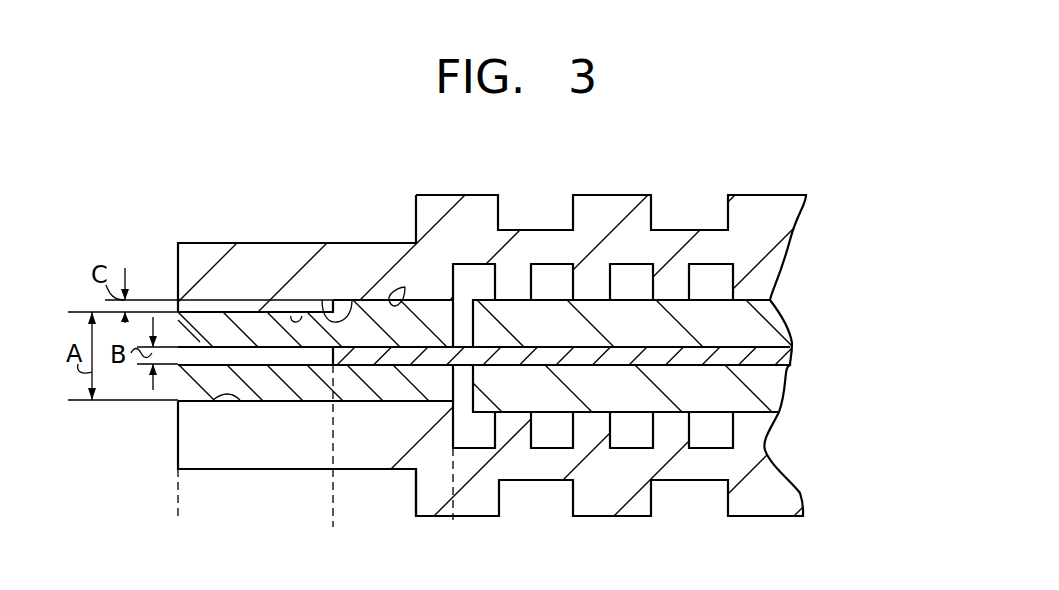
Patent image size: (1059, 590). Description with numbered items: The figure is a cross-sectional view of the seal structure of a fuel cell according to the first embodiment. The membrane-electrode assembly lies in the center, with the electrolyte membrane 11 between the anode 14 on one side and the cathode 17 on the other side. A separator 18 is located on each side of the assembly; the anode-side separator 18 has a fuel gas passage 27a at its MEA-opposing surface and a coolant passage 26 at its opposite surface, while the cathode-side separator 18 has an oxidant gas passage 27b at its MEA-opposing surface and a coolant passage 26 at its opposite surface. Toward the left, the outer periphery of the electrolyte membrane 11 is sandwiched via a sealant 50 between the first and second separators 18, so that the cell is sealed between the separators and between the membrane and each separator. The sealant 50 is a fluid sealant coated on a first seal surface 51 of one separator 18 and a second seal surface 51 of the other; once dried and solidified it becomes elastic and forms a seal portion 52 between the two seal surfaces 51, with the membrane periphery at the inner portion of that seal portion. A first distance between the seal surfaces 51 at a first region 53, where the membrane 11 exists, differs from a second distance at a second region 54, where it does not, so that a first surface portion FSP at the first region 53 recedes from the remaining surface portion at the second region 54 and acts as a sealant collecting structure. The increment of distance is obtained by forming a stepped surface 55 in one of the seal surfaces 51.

The electrolyte membrane 11 is at (390, 350).
The anode 14 is at (745, 393).
The cathode 17 is at (750, 327).
The separator 18 is at (237, 267).
The coolant passage 26 is at (540, 230).
The fuel gas passage 27a is at (472, 433).
The oxidant gas passage 27b is at (472, 277).
The sealant 50 is at (212, 387).
The seal surface 51 is at (302, 316).
The seal portion 52 is at (207, 322).
The first region 53 is at (453, 519).
The second region 54 is at (333, 519).
The stepped surface 55 is at (347, 300).
The first surface portion FSP is at (405, 287).